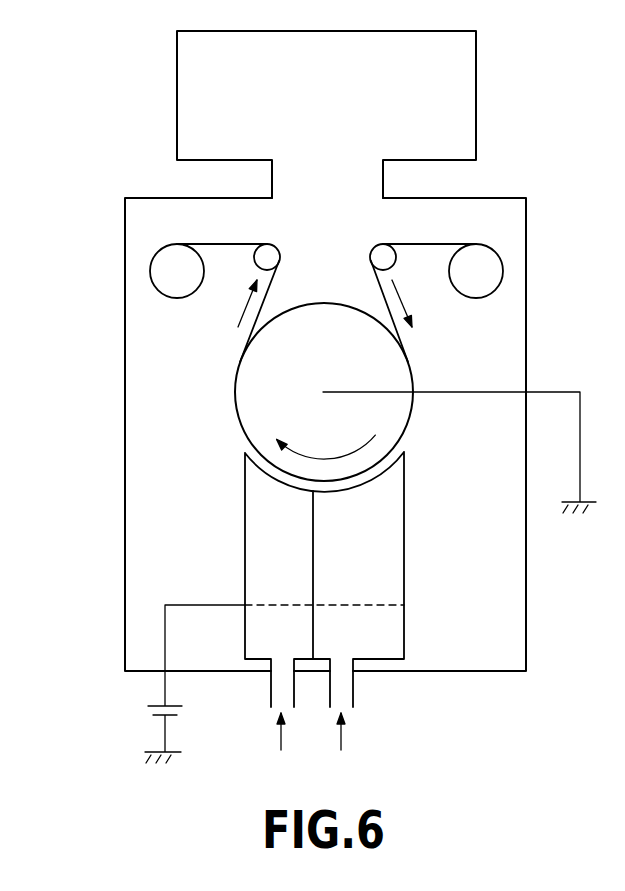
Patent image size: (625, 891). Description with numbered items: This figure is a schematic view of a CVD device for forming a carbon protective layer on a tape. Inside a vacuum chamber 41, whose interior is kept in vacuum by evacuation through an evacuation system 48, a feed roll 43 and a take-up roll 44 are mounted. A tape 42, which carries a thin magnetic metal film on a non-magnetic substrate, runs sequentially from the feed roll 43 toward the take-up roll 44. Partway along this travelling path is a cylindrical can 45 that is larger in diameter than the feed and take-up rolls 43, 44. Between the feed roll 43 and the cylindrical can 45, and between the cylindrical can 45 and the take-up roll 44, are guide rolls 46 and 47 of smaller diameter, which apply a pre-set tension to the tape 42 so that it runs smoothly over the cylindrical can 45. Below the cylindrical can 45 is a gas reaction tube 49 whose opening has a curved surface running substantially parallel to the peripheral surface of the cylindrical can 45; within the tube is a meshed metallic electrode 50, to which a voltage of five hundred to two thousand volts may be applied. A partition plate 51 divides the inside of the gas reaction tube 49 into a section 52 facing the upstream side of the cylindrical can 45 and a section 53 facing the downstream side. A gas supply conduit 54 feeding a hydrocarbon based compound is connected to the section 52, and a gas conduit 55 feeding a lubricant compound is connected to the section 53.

The vacuum chamber 41 is at (125, 463).
The tape 42 is at (423, 244).
The feed roll 43 is at (485, 272).
The take-up roll 44 is at (165, 272).
The cylindrical can 45 is at (247, 379).
The guide roll 46 is at (382, 252).
The guide roll 47 is at (272, 252).
The evacuation system 48 is at (460, 110).
The gas reaction tube 49 is at (406, 510).
The meshed metallic electrode 50 is at (375, 605).
The partition plate 51 is at (313, 512).
The section 52 is at (393, 562).
The section 53 is at (260, 543).
The gas supply conduit 54 is at (353, 695).
The gas conduit 55 is at (270, 692).